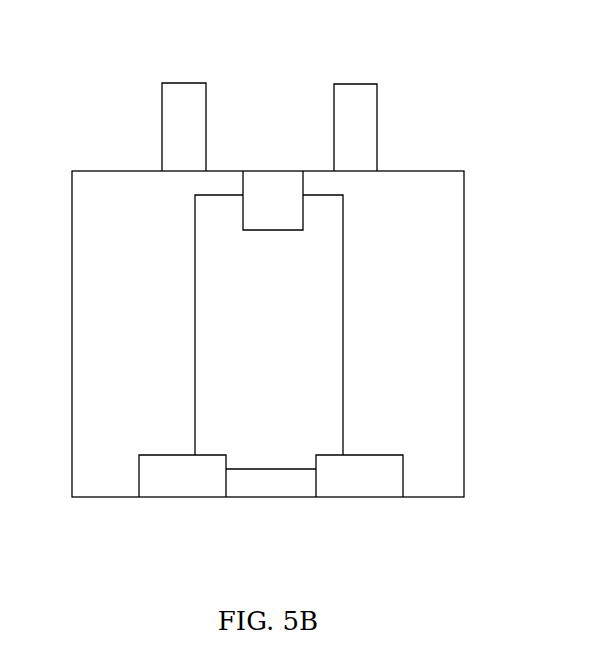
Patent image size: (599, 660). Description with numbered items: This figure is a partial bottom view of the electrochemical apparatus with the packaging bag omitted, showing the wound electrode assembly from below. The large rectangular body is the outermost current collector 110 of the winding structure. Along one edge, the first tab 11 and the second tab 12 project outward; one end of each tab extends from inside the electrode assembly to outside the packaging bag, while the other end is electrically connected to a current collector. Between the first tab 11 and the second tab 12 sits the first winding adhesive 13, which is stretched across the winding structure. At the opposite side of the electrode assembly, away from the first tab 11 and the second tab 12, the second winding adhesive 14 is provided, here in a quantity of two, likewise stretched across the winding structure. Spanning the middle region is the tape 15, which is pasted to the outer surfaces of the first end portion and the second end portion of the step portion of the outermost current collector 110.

The outermost current collector 110 is at (422, 213).
The first tab 11 is at (182, 125).
The second tab 12 is at (353, 124).
The first winding adhesive 13 is at (272, 200).
The second winding adhesive 14 is at (195, 473).
The tape 15 is at (321, 329).